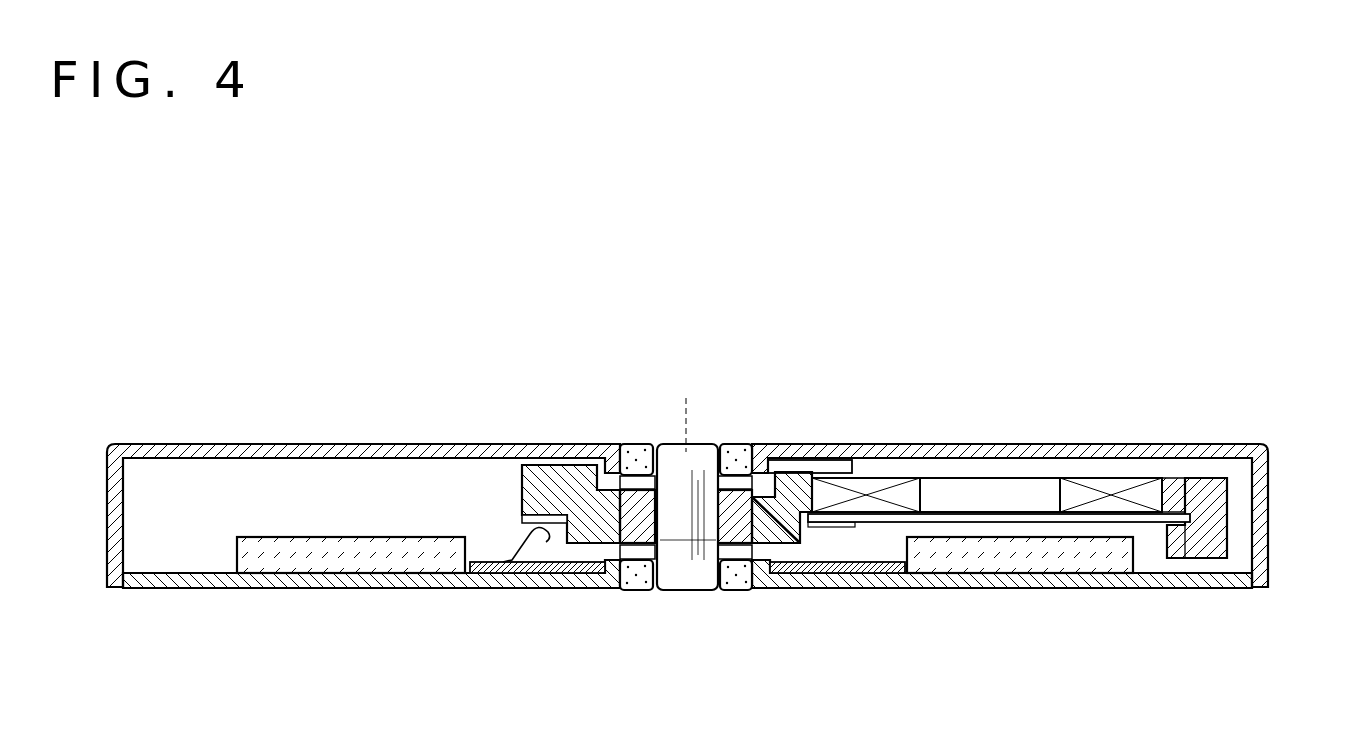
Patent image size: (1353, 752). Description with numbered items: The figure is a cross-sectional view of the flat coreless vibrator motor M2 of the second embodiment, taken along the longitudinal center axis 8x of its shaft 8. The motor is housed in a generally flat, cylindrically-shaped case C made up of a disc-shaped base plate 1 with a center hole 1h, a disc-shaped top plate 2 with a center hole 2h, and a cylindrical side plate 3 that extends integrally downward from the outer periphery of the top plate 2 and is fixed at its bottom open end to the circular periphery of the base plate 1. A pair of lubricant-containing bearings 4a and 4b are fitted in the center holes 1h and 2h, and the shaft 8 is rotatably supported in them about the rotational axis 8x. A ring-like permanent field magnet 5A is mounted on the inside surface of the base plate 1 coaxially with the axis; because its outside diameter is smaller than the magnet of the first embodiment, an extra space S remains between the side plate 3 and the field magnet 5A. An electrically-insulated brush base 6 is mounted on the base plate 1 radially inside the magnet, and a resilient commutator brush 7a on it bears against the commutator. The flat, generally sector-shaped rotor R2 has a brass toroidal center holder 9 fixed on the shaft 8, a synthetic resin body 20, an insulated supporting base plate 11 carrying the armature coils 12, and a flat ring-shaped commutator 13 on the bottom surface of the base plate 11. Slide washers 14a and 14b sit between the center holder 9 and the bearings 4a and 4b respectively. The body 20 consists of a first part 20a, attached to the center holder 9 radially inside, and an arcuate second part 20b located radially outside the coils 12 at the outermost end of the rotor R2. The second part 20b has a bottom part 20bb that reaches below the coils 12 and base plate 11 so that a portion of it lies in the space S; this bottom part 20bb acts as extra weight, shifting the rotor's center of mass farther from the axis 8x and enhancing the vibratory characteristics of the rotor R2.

The base plate 1 is at (293, 575).
The center hole 1h is at (628, 590).
The top plate 2 is at (165, 447).
The center hole 2h is at (627, 445).
The side plate 3 is at (105, 526).
The bearing 4a is at (735, 580).
The bearing 4b is at (745, 447).
The field magnet 5A is at (395, 558).
The brush base 6 is at (910, 588).
The commutator brush 7a is at (552, 545).
The shaft 8 is at (668, 447).
The center axis 8x is at (688, 425).
The center holder 9 is at (668, 545).
The supporting base plate 11 is at (1035, 516).
The armature coils 12 is at (916, 490).
The commutator 13 is at (825, 545).
The slide washer 14a is at (790, 590).
The slide washer 14b is at (823, 448).
The body 20 is at (517, 492).
The first part 20a is at (556, 488).
The second part 20b is at (1220, 490).
The bottom part 20bb is at (1185, 590).
The case C is at (388, 441).
The vibrator motor M2 is at (270, 396).
The rotor R2 is at (1007, 476).
The space S is at (1160, 585).